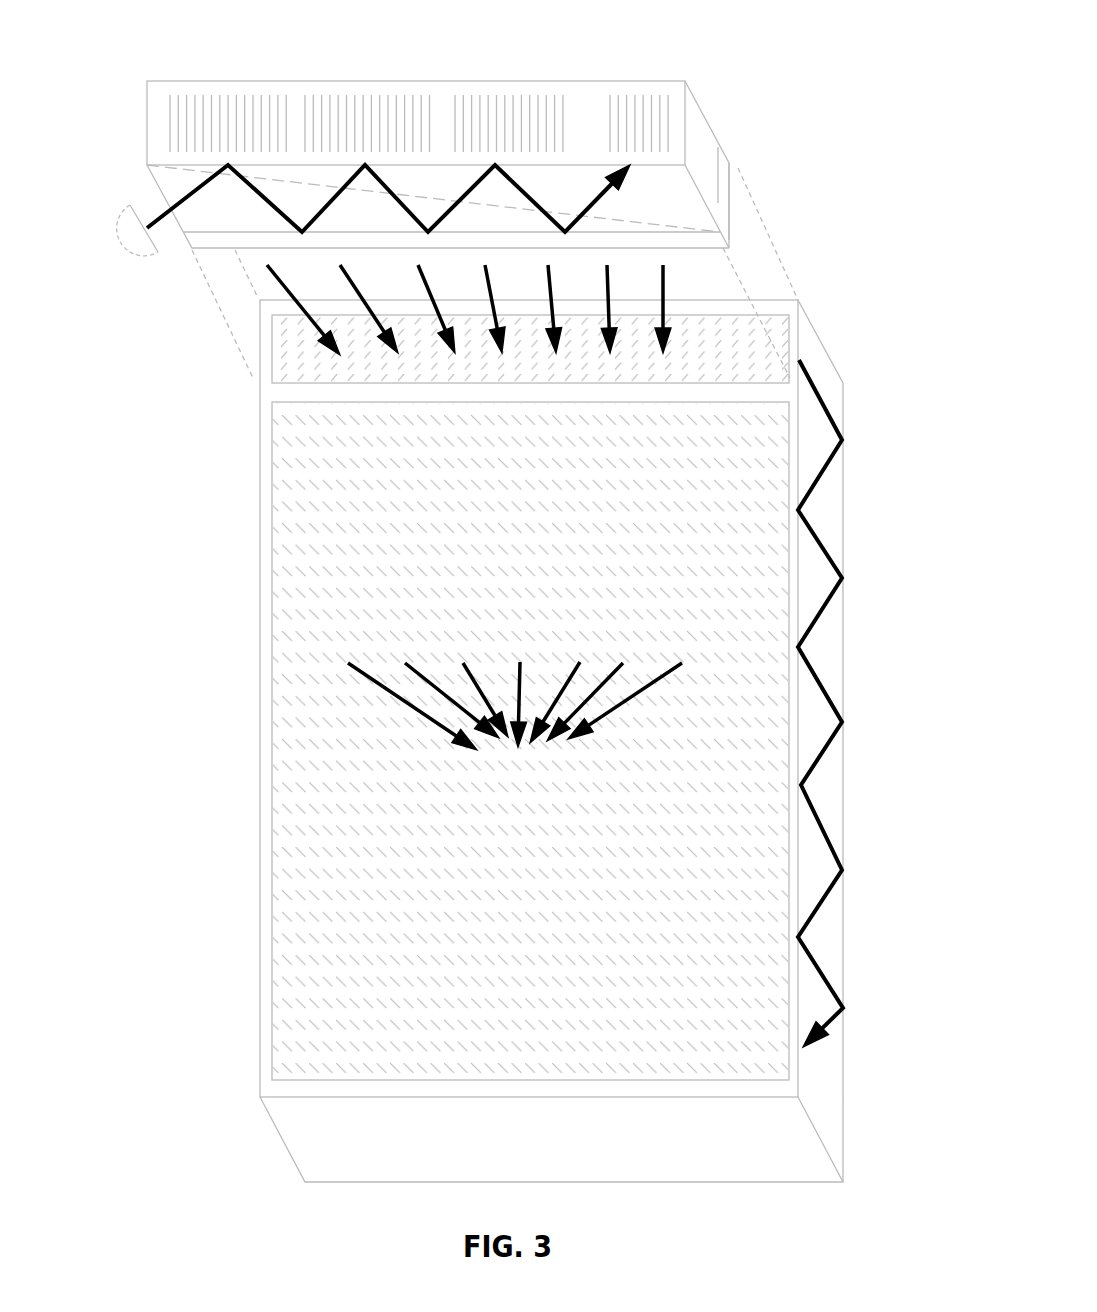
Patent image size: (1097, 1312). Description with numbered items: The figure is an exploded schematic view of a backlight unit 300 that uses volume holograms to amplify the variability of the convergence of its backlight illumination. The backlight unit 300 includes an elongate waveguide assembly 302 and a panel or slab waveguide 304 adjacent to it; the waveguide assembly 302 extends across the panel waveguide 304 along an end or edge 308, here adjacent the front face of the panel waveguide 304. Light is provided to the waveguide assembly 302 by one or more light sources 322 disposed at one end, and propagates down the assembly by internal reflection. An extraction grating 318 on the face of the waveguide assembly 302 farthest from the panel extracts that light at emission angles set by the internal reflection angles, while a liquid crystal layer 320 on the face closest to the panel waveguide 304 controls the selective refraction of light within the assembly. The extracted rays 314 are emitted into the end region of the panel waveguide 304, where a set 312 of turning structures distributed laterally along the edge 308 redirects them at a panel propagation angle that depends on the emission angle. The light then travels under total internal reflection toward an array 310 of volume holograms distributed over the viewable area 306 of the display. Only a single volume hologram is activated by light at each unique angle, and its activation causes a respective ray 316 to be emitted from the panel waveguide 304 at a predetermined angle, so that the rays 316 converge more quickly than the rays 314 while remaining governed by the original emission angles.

The backlight unit 300 is at (772, 32).
The elongate waveguide assembly 302 is at (703, 122).
The panel waveguide 304 is at (261, 566).
The viewable area 306 is at (811, 604).
The edge 308 is at (798, 298).
The array of volume holograms 310 is at (768, 462).
The set of turning structures 312 is at (755, 342).
The rays of light 314 is at (295, 300).
The rays of light 316 is at (425, 680).
The extraction grating 318 is at (503, 100).
The liquid crystal layer 320 is at (723, 160).
The light source 322 is at (130, 205).